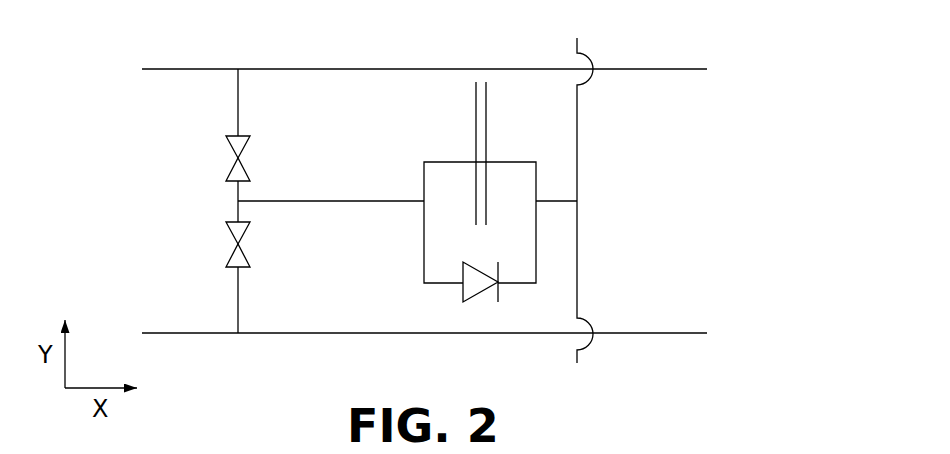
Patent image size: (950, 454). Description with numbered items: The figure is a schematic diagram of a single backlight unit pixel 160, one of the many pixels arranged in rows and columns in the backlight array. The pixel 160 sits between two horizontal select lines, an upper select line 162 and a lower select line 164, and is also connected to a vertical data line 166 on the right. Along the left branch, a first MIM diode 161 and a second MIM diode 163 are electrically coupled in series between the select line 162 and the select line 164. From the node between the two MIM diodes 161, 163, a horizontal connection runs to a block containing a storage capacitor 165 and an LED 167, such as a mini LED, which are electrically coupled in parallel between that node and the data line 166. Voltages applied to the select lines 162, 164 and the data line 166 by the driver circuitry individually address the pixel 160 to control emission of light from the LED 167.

The pixel 160 is at (748, 128).
The first MIM diode 161 is at (226, 155).
The select line 162 is at (197, 69).
The second MIM diode 163 is at (226, 245).
The select line 164 is at (193, 333).
The storage capacitor 165 is at (496, 147).
The data line 166 is at (580, 177).
The LED 167 is at (445, 290).